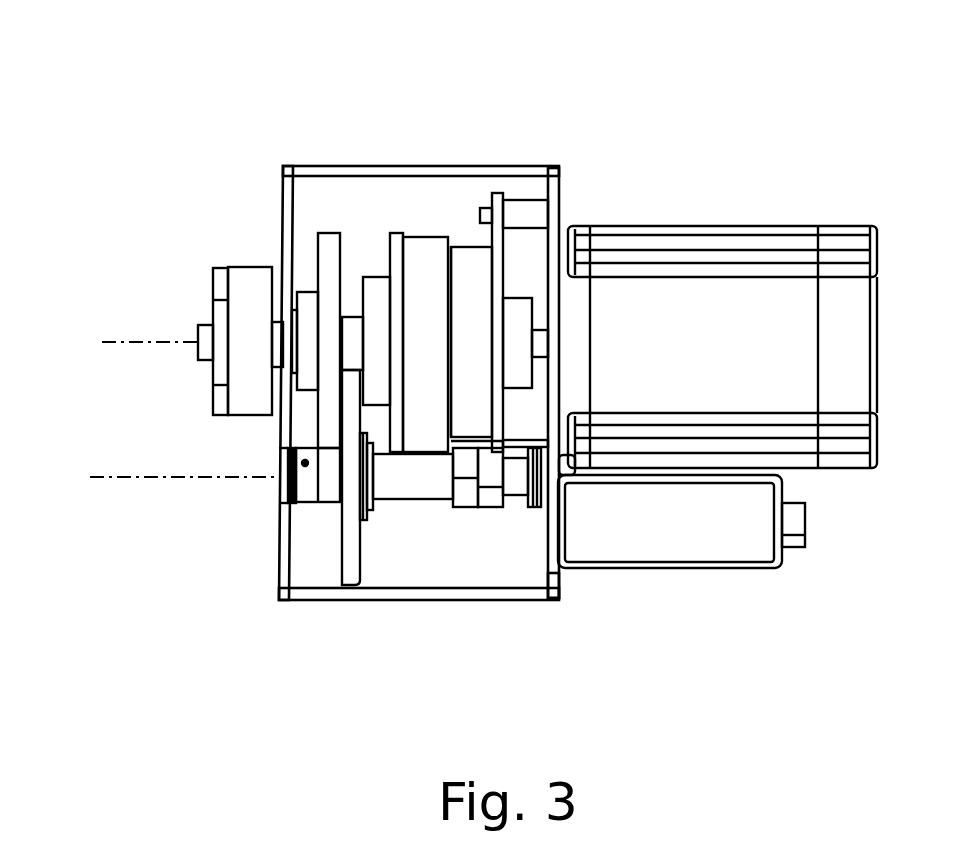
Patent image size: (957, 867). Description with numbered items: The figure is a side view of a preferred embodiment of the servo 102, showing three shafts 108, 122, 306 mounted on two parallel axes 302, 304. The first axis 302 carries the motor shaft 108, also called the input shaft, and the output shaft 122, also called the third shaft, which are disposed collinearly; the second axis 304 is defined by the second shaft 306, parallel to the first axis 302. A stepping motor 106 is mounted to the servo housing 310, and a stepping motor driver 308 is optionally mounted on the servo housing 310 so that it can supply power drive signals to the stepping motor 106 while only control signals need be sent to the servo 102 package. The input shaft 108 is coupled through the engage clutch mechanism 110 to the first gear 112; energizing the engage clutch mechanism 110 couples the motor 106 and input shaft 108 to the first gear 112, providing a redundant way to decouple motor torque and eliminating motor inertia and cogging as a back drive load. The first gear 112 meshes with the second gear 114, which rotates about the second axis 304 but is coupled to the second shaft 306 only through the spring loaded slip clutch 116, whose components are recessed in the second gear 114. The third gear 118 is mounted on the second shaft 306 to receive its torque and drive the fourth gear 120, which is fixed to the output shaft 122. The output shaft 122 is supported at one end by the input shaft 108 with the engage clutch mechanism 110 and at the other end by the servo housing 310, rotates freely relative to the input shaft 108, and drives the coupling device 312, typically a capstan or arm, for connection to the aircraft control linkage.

The servo 102 is at (822, 97).
The stepping motor 106 is at (737, 227).
The motor shaft 108 is at (538, 357).
The engage clutch mechanism 110 is at (475, 245).
The first gear 112 is at (352, 317).
The second gear 114 is at (350, 586).
The spring loaded slip clutch 116 is at (417, 500).
The third gear 118 is at (325, 503).
The fourth gear 120 is at (326, 232).
The output shaft 122 is at (202, 320).
The first axis 302 is at (125, 342).
The second axis 304 is at (163, 477).
The second shaft 306 is at (278, 478).
The stepping motor driver 308 is at (622, 562).
The servo housing 310 is at (560, 190).
The coupling device 312 is at (242, 265).